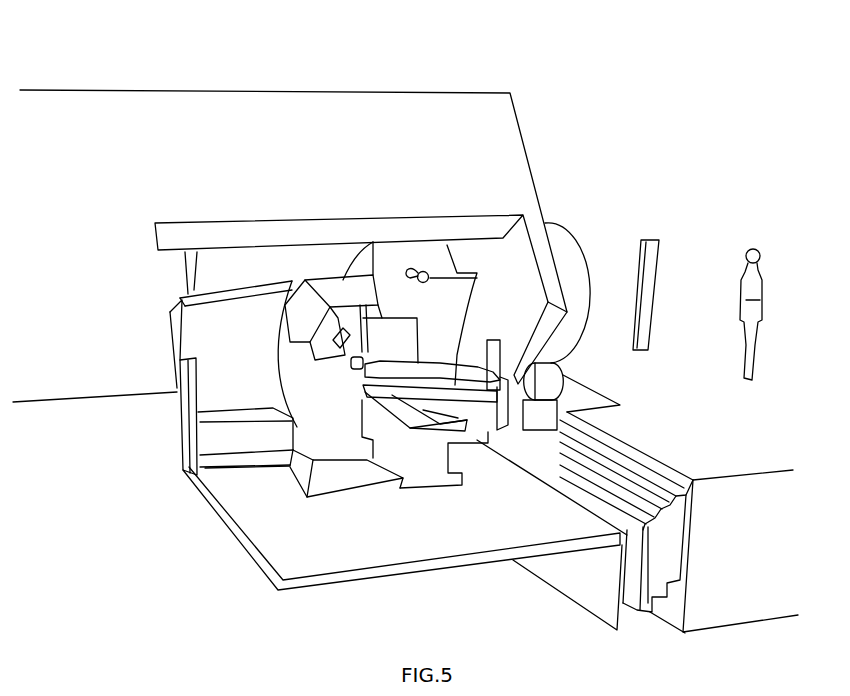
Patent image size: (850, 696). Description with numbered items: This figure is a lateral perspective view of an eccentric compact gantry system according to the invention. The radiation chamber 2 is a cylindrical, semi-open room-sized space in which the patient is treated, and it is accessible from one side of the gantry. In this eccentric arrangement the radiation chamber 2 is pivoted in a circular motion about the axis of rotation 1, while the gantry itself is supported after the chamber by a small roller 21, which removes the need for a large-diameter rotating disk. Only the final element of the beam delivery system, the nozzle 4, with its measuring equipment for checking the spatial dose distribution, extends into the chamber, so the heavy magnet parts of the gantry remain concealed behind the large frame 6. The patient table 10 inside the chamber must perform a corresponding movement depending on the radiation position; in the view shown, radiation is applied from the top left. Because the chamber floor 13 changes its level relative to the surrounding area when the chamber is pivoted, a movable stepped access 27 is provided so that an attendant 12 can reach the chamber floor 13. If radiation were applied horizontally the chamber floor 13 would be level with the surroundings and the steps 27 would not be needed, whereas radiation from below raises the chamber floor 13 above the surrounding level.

The axis of rotation 1 is at (570, 290).
The radiation chamber 2 is at (233, 345).
The nozzle 4 is at (348, 306).
The gantry frame 6 is at (229, 115).
The patient table 10 is at (383, 362).
The attendant 12 is at (749, 298).
The chamber floor 13 is at (492, 530).
The roller 21 is at (563, 257).
The stepped access 27 is at (653, 498).